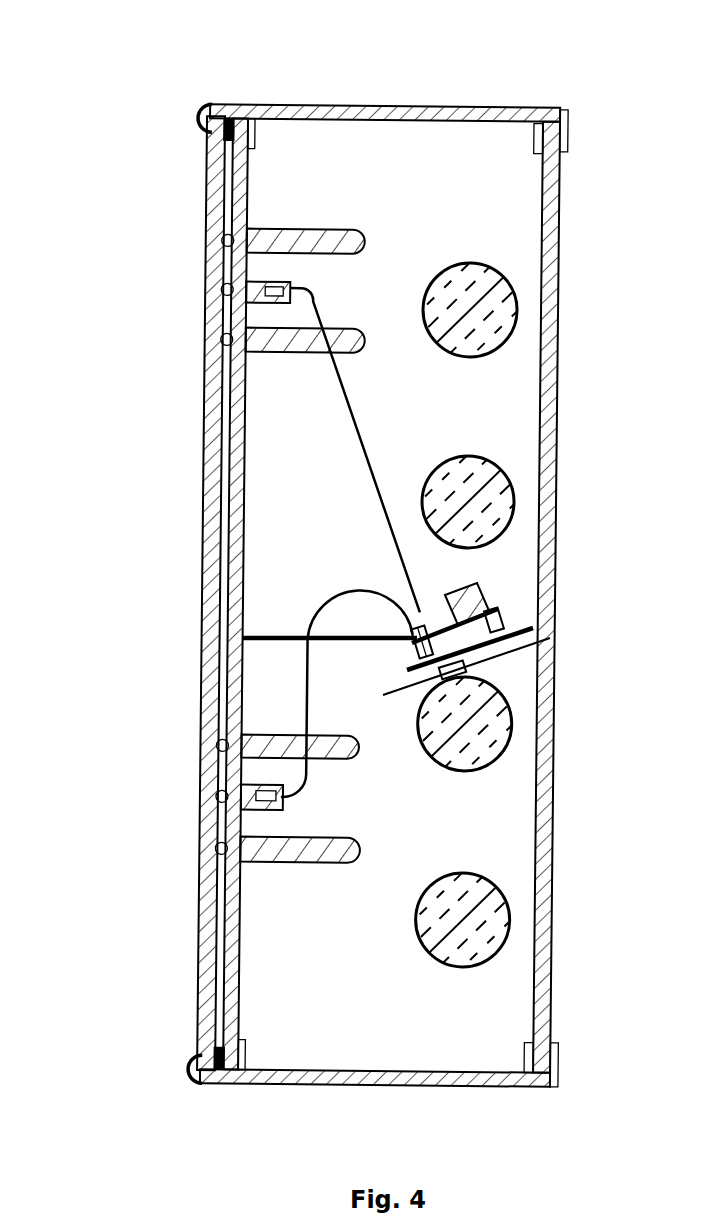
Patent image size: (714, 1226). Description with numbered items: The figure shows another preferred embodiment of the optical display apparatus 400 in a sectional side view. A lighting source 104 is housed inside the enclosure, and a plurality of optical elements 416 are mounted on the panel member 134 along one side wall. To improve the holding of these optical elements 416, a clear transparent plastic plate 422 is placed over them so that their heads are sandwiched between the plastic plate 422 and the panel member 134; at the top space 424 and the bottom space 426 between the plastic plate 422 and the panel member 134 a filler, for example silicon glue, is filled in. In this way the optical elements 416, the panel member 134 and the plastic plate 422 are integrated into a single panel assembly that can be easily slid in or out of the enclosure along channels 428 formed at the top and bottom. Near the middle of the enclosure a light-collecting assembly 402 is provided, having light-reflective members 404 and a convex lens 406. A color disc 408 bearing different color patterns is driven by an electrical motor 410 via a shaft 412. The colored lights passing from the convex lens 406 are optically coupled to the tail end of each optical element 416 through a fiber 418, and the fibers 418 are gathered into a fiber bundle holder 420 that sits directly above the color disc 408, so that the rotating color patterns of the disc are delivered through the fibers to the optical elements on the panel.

The optical display apparatus 400 is at (94, 96).
The lighting source 104 is at (478, 268).
The panel member 134 is at (244, 478).
The light-collecting assembly 402 is at (440, 673).
The light-reflective members 404 is at (513, 706).
The convex lens 406 is at (420, 681).
The color disc 408 is at (518, 625).
The electrical motor 410 is at (462, 598).
The shaft 412 is at (548, 636).
The optical elements 416 is at (288, 285).
The fiber 418 is at (350, 421).
The fiber bundle holder 420 is at (410, 651).
The clear transparent plastic plate 422 is at (205, 443).
The top space 424 is at (243, 108).
The bottom space 426 is at (222, 1086).
The channels 428 is at (195, 108).